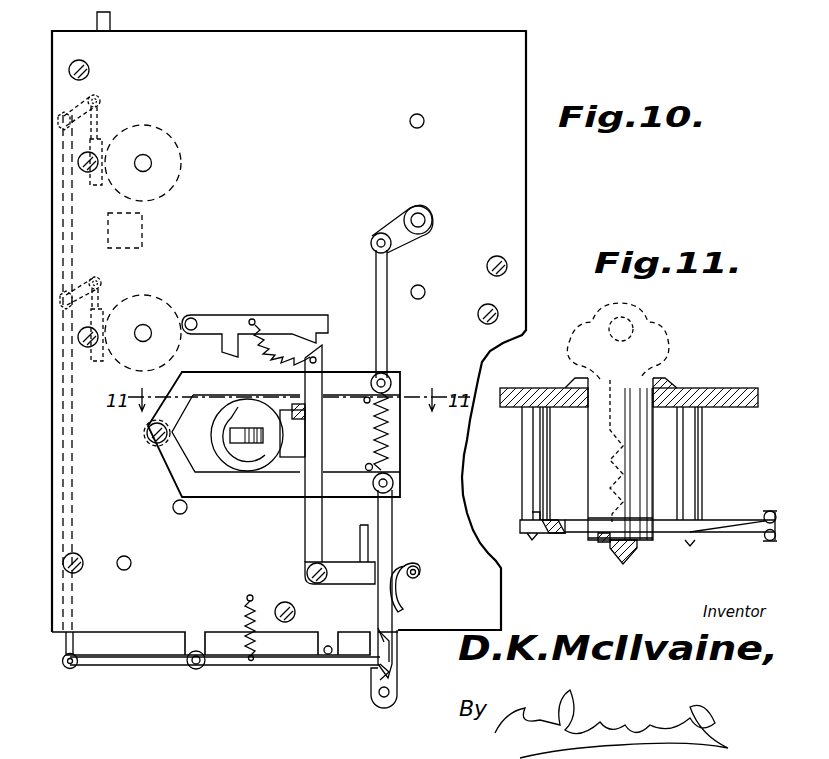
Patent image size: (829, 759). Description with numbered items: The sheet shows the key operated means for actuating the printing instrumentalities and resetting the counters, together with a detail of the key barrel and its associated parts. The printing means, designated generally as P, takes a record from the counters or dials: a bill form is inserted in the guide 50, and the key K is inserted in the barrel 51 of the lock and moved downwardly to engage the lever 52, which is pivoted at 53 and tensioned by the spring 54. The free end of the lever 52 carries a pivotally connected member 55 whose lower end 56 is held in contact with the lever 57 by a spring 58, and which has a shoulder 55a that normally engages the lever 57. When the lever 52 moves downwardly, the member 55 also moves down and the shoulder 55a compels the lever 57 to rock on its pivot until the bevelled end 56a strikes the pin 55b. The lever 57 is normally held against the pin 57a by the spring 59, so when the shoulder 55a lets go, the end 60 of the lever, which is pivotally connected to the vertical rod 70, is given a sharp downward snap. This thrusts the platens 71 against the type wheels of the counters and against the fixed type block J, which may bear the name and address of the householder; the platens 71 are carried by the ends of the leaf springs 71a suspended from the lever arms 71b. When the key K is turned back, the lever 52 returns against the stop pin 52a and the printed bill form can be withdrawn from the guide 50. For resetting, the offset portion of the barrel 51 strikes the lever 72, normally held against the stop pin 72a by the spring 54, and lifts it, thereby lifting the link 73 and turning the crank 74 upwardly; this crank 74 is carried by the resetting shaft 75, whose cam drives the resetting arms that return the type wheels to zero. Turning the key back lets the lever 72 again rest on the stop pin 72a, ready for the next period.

In FIG. 10, the guide 50 is at (112, 22).
In FIG. 10, the printing means P is at (54, 241).
In FIG. 10, the vertical rod 70 is at (58, 146).
In FIG. 10, the lever arms 71b is at (100, 98).
In FIG. 10, the leaf springs 71a is at (98, 125).
In FIG. 10, the platens 71 is at (97, 182).
In FIG. 10, the fixed type block J is at (145, 246).
In FIG. 10, the resetting shaft 75 is at (421, 213).
In FIG. 10, the crank 74 is at (395, 228).
In FIG. 10, the link 73 is at (385, 316).
In FIG. 10, the lever 72 is at (344, 376).
In FIG. 11, the lever 72 is at (558, 540).
In FIG. 10, the stop pin 72a is at (364, 402).
In FIG. 10, the spring 54 is at (389, 440).
In FIG. 11, the spring 54 is at (772, 540).
In FIG. 10, the stop pin 52a is at (366, 465).
In FIG. 10, the lever 52 is at (281, 483).
In FIG. 11, the lever 52 is at (720, 520).
In FIG. 10, the pivot 53 is at (160, 446).
In FIG. 11, the pivot 53 is at (532, 545).
In FIG. 10, the barrel 51 is at (250, 448).
In FIG. 11, the barrel 51 is at (599, 445).
In FIG. 10, the member 55 is at (392, 550).
In FIG. 10, the shoulder 55a is at (376, 640).
In FIG. 10, the lower end 56 is at (388, 662).
In FIG. 10, the bevelled end 56a is at (391, 677).
In FIG. 10, the pin 55b is at (380, 698).
In FIG. 10, the spring 58 is at (408, 583).
In FIG. 10, the spring 59 is at (245, 614).
In FIG. 10, the end 60 is at (122, 666).
In FIG. 10, the lever 57 is at (262, 668).
In FIG. 10, the pin 57a is at (326, 664).
In FIG. 11, the key K is at (657, 339).